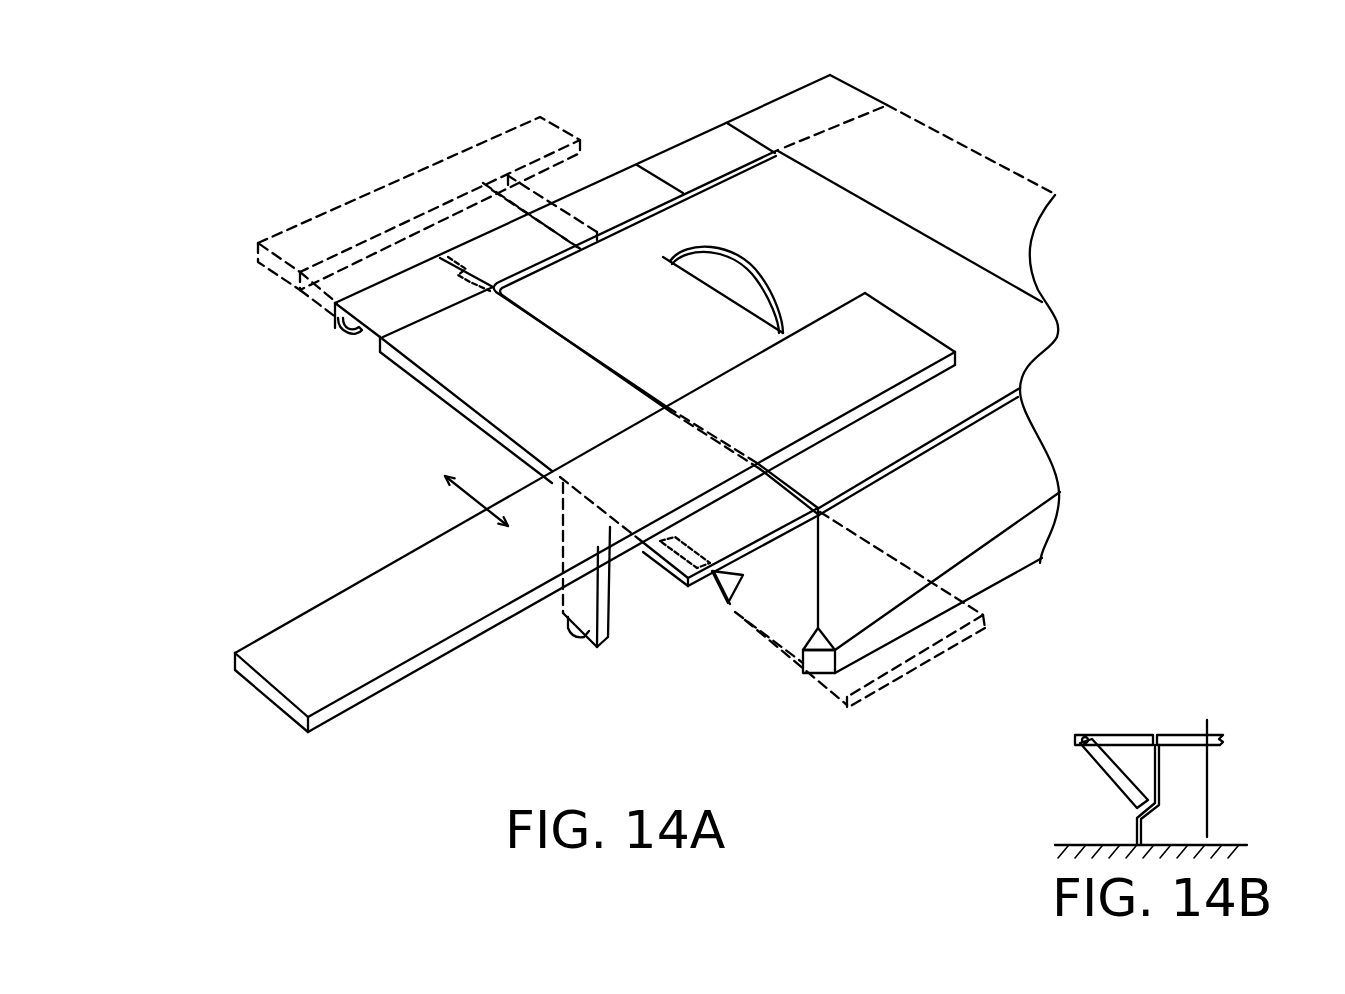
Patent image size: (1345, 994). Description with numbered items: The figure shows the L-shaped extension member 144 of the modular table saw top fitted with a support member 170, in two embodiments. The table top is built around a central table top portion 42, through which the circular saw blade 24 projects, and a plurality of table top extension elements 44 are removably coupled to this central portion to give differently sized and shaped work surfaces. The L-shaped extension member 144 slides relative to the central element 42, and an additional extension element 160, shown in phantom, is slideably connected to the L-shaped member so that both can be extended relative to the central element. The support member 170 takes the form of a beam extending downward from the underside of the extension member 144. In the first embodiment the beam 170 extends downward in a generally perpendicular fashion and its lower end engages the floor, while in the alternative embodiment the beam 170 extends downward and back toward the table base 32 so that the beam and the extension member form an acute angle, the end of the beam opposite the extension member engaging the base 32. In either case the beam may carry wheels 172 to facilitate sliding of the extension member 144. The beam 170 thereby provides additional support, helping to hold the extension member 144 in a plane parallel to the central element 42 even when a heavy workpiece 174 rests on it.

In FIG. 14A, the circular saw blade 24 is at (737, 273).
In FIG. 14B, the table base 32 is at (1160, 775).
In FIG. 14A, the central table top portion 42 is at (1017, 350).
In FIG. 14B, the central table top portion 42 is at (1217, 733).
In FIG. 14B, the table top extension element 44 is at (1123, 735).
In FIG. 14A, the L-shaped extension member 144 is at (460, 363).
In FIG. 14A, the additional extension element 160 is at (560, 133).
In FIG. 14A, the support member 170 is at (602, 595).
In FIG. 14B, the support member 170 is at (1100, 773).
In FIG. 14A, the wheels 172 is at (567, 632).
In FIG. 14A, the workpiece 174 is at (280, 675).